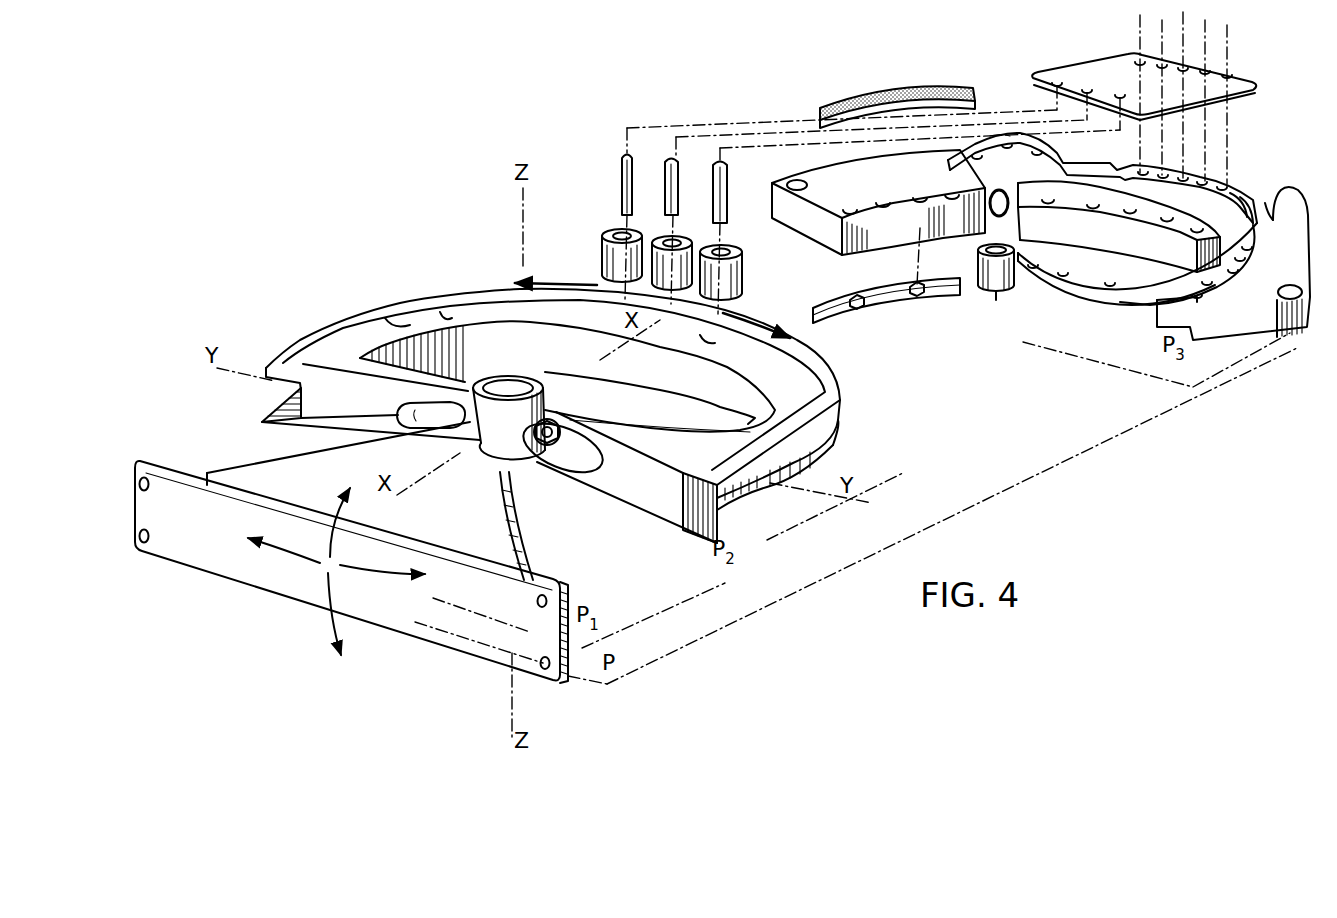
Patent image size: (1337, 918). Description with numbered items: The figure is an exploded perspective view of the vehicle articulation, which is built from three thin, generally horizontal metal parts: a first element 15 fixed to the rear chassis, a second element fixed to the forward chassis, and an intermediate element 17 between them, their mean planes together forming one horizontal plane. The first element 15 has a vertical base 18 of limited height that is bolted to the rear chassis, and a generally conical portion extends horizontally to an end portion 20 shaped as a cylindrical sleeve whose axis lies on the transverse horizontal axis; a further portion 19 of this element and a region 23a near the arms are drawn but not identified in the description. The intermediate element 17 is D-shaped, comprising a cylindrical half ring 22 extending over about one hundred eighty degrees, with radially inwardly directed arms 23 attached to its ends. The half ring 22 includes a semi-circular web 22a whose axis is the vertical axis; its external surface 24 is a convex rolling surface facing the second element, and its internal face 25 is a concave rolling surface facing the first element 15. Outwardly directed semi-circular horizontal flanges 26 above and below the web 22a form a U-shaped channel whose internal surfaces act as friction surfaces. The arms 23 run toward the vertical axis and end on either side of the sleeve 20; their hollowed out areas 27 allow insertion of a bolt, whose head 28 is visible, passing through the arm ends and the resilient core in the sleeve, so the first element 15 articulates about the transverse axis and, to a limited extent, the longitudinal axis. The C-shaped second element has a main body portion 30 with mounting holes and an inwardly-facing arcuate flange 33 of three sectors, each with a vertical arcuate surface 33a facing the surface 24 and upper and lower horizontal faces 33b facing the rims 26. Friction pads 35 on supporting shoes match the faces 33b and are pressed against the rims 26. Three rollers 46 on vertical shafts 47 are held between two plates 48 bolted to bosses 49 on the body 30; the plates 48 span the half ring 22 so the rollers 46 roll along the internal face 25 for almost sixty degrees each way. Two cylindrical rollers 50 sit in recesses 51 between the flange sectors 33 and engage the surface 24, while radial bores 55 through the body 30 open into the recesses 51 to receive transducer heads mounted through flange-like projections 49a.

The first element 15 is at (212, 450).
The intermediate element 17 is at (483, 290).
The vertical base 18 is at (272, 578).
The pivot shaft 19 is at (528, 540).
The end portion 20 is at (533, 470).
The cylindrical half ring 22 is at (845, 389).
The semi-circular web 22a is at (683, 493).
The arms 23 is at (650, 485).
The arm slot 23a is at (397, 413).
The external surface 24 is at (745, 535).
The internal face 25 is at (660, 397).
The semi-circular horizontal flanges 26 is at (420, 312).
The hollowed out areas 27 is at (592, 455).
The head 28 is at (560, 425).
The main body portion 30 is at (1215, 263).
The inwardly-facing arcuate flange 33 is at (813, 223).
The vertical arcuate surface 33a is at (1135, 243).
The upper and lower horizontal faces 33b is at (1190, 223).
The friction pads 35 is at (900, 97).
The rollers 46 is at (620, 256).
The vertical shafts 47 is at (621, 172).
The plates 48 is at (1240, 85).
The bosses 49 is at (1207, 183).
The flange-like projections 49a is at (1020, 148).
The cylindrical rollers 50 is at (996, 287).
The recesses 51 is at (905, 283).
The bores 55 is at (1012, 220).